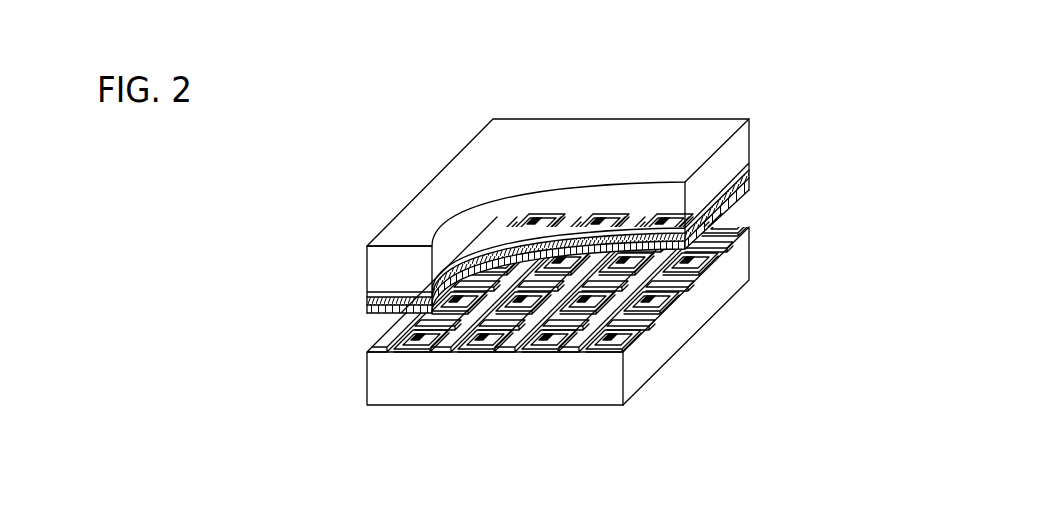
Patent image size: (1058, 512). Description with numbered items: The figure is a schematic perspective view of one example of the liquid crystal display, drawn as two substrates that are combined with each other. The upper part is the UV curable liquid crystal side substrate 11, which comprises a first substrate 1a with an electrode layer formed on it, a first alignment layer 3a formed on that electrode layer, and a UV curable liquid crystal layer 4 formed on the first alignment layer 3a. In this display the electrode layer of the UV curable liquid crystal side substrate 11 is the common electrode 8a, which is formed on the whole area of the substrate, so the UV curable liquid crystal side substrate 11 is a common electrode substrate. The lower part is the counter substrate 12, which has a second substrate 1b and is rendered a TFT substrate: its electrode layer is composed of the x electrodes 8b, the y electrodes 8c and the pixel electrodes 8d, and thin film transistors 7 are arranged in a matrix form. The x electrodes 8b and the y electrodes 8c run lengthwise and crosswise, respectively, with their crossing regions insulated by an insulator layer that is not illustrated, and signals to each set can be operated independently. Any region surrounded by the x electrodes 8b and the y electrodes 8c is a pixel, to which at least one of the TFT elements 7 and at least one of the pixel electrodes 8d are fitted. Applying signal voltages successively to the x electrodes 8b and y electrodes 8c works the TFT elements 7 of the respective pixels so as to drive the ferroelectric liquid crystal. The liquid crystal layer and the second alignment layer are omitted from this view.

The UV curable liquid crystal side substrate 11 is at (605, 140).
The first substrate 1a is at (746, 146).
The common electrode 8a is at (749, 163).
The first alignment layer 3a is at (749, 170).
The UV curable liquid crystal layer 4 is at (750, 186).
The second substrate 1b is at (746, 258).
The pixel electrodes 8d is at (690, 264).
The thin film transistors (TFT elements) 7 is at (688, 298).
The x electrodes 8b is at (655, 310).
The y electrodes 8c is at (575, 352).
The counter substrate 12 is at (452, 382).